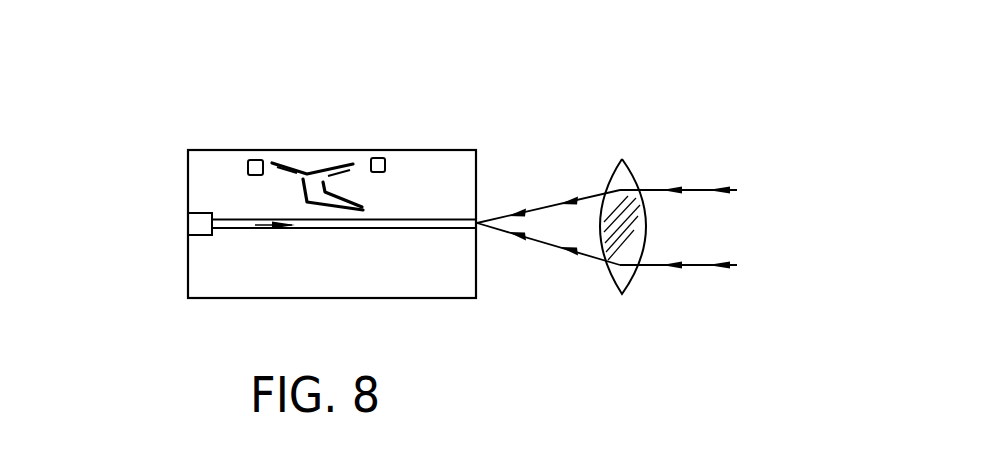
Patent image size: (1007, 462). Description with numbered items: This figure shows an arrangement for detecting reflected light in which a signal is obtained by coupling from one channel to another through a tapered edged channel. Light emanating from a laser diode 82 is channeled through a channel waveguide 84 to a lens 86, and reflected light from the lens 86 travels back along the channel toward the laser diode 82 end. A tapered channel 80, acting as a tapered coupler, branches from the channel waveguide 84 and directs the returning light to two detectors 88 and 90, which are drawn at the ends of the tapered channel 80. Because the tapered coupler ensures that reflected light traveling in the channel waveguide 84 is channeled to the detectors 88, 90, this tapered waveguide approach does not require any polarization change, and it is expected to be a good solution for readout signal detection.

The tapered channel 80 is at (358, 206).
The laser diode 82 is at (188, 222).
The channel waveguide 84 is at (236, 218).
The lens 86 is at (616, 279).
The detector 88 is at (254, 160).
The detector 90 is at (379, 158).